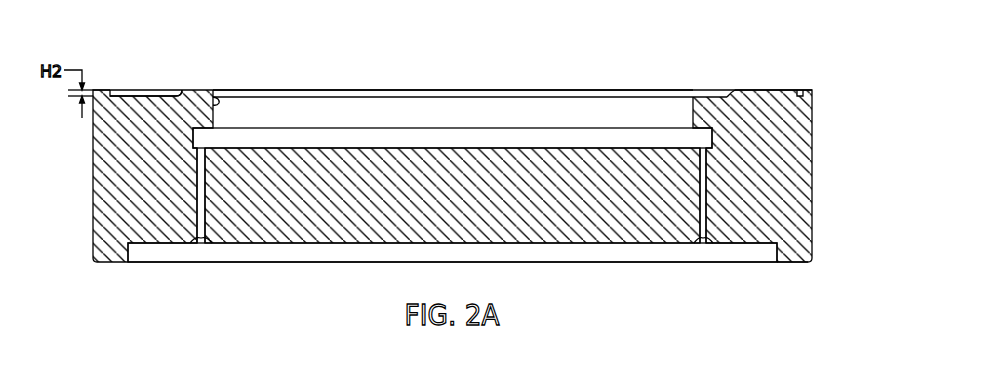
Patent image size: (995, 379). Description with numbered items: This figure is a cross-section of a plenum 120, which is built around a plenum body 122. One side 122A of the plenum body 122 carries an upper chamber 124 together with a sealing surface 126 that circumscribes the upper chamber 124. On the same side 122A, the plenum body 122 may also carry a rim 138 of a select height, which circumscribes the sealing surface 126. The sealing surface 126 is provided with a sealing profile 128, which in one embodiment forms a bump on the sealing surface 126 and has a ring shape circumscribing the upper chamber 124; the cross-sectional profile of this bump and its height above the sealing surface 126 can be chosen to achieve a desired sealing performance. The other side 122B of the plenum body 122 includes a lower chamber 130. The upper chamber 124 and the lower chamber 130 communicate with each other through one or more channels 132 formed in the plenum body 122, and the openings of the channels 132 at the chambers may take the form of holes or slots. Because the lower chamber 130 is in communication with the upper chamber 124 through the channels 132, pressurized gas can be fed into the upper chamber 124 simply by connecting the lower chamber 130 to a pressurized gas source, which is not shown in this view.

The plenum 120 is at (474, 158).
The plenum body 122 is at (812, 178).
The one side of the plenum body 122A is at (798, 90).
The other side of the plenum body 122B is at (793, 262).
The upper chamber 124 is at (215, 96).
The sealing surface 126 is at (147, 93).
The sealing profile 128 is at (176, 92).
The lower chamber 130 is at (128, 248).
The channels 132 is at (202, 243).
The rim 138 is at (100, 89).